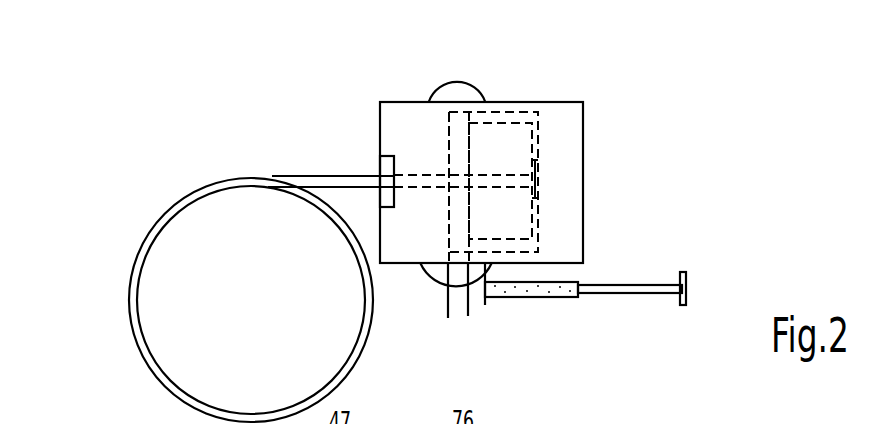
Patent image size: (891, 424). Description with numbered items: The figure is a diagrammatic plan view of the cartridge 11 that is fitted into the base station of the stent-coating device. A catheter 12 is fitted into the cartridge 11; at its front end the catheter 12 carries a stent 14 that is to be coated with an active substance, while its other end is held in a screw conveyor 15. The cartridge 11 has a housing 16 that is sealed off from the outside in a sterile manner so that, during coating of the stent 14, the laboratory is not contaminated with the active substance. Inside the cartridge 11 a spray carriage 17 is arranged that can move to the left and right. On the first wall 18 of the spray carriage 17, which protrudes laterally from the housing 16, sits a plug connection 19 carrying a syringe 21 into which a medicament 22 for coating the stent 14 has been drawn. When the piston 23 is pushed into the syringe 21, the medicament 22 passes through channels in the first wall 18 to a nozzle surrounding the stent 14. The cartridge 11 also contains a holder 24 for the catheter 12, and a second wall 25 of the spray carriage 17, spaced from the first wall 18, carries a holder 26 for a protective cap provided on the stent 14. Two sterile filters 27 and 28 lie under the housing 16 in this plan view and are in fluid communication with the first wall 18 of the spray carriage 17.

The cartridge 11 is at (683, 102).
The catheter 12 is at (309, 162).
The stent 14 is at (503, 172).
The screw conveyor 15 is at (182, 198).
The housing 16 is at (558, 120).
The spray carriage 17 is at (497, 145).
The first wall 18 is at (460, 290).
The plug connection 19 is at (477, 295).
The syringe 21 is at (567, 296).
The medicament 22 is at (527, 290).
The piston 23 is at (648, 283).
The holder 24 is at (399, 145).
The second wall 25 is at (538, 225).
The holder 26 is at (537, 180).
The sterile filter 27 is at (455, 80).
The sterile filter 28 is at (433, 285).